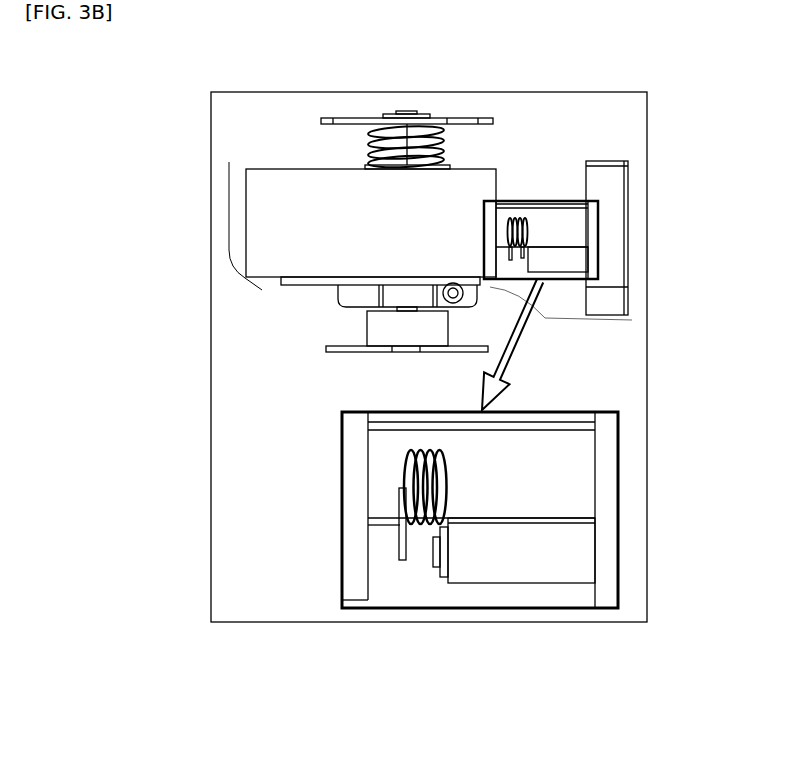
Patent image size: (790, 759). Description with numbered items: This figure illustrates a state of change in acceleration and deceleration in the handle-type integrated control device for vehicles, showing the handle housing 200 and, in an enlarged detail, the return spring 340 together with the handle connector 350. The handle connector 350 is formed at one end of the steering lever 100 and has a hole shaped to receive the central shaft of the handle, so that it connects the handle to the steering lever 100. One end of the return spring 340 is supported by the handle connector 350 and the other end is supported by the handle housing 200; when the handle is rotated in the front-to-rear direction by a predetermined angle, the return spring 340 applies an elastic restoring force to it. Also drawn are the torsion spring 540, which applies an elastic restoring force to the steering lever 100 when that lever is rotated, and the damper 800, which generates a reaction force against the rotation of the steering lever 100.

The steering lever 100 is at (608, 186).
The handle housing 200 is at (262, 291).
The return spring 340 is at (517, 216).
The handle connector 350 is at (580, 257).
The torsion spring 540 is at (372, 128).
The damper 800 is at (375, 336).